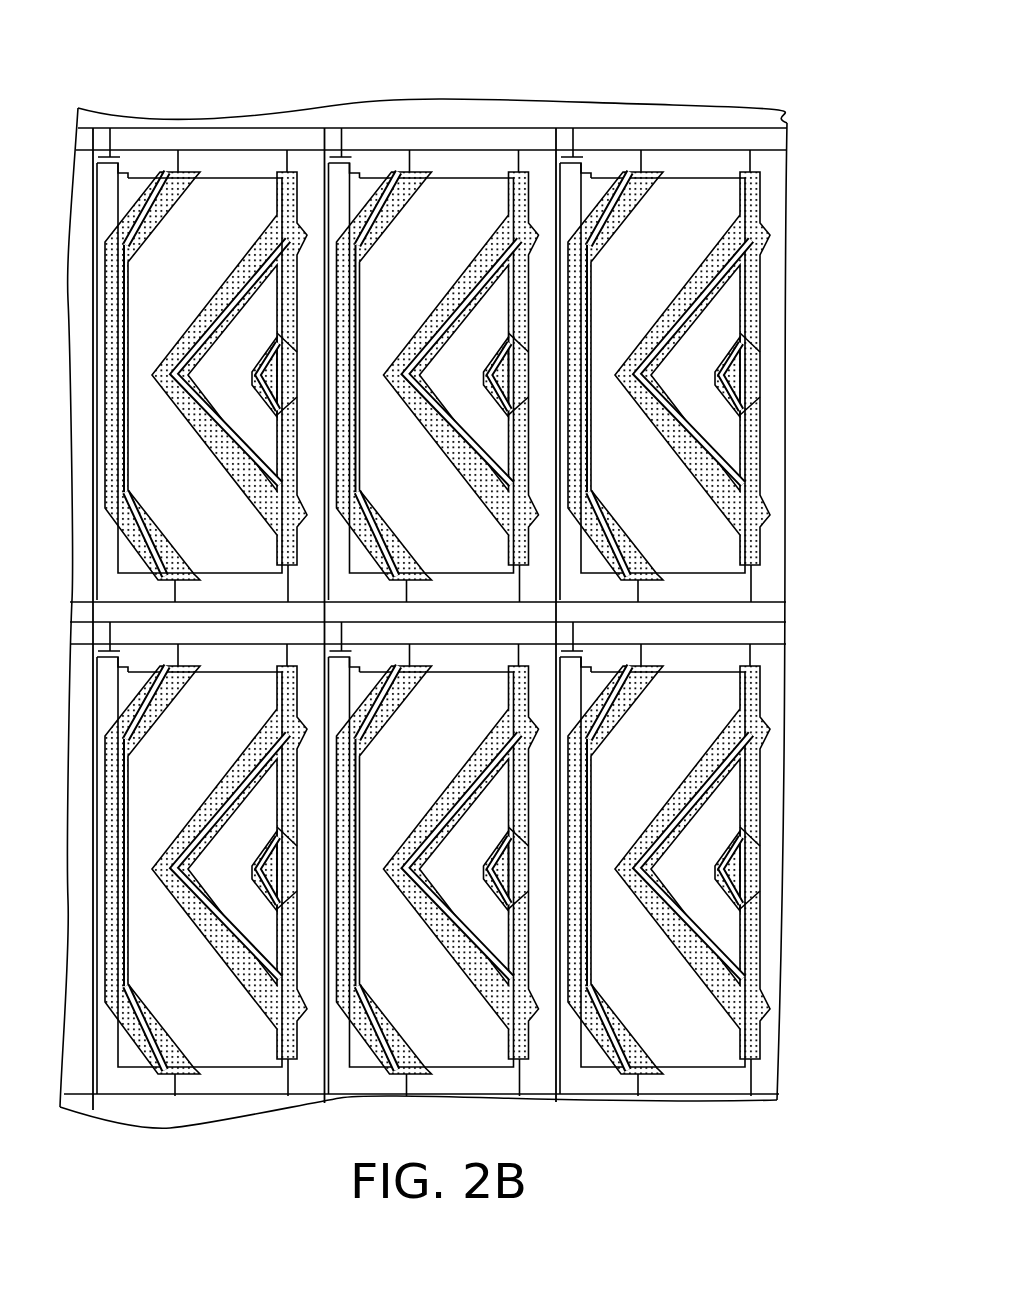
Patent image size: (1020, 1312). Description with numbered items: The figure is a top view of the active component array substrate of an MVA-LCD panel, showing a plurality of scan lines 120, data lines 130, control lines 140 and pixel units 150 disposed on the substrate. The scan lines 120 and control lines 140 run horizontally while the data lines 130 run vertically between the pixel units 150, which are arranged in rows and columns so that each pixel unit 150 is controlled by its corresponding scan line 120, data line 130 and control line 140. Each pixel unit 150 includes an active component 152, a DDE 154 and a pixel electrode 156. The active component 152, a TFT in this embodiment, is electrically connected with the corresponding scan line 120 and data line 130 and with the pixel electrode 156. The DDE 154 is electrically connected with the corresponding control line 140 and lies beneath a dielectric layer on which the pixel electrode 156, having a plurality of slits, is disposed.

The scan line 120 is at (745, 127).
The data line 130 is at (558, 120).
The control line 140 is at (767, 150).
The pixel unit 150 is at (287, 38).
The active component 152 is at (120, 156).
The DDE 154 is at (183, 170).
The pixel electrode 156 is at (233, 178).